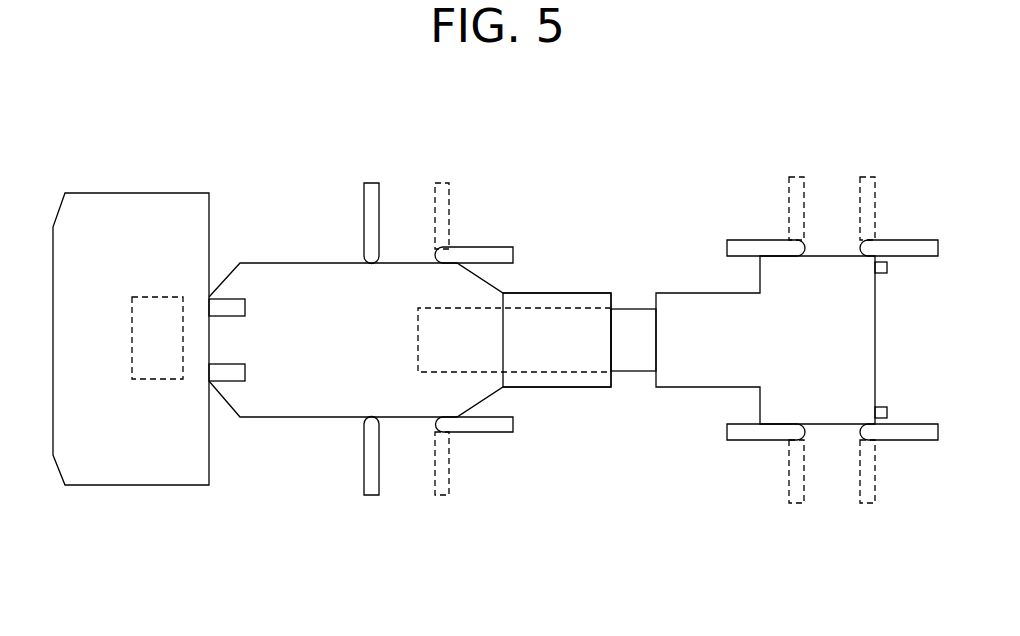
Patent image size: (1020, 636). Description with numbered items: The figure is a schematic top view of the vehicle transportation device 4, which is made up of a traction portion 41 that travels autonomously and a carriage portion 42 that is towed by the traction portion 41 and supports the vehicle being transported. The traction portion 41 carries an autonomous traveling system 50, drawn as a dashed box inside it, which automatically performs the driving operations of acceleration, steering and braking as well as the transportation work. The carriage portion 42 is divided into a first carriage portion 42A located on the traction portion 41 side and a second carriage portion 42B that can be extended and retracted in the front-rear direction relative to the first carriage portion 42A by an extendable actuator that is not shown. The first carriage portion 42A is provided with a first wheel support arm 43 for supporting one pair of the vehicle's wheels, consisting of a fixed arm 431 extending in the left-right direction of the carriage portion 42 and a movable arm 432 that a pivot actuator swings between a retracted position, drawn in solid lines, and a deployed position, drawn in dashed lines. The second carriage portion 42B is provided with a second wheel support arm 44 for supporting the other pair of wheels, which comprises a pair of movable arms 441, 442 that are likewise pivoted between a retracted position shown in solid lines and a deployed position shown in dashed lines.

The vehicle transportation device 4 is at (310, 174).
The traction portion 41 is at (100, 222).
The carriage portion 42 is at (652, 320).
The first carriage portion 42A is at (570, 300).
The second carriage portion 42B is at (685, 300).
The first wheel support arm 43 is at (433, 337).
The fixed arm 431 is at (371, 183).
The movable arm 432 is at (470, 247).
The second wheel support arm 44 is at (832, 345).
The movable arm 441 is at (760, 250).
The movable arm 442 is at (890, 245).
The autonomous traveling system 50 is at (130, 352).